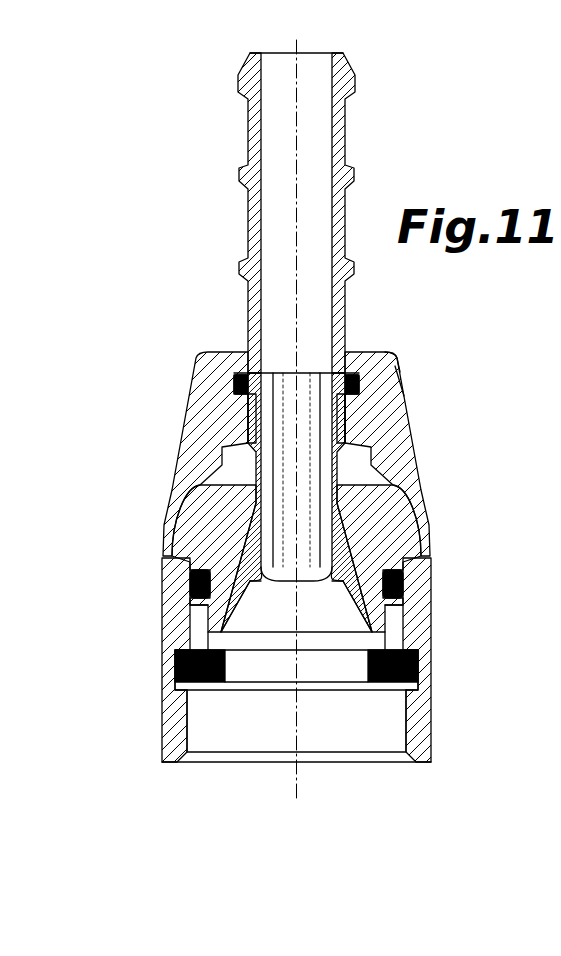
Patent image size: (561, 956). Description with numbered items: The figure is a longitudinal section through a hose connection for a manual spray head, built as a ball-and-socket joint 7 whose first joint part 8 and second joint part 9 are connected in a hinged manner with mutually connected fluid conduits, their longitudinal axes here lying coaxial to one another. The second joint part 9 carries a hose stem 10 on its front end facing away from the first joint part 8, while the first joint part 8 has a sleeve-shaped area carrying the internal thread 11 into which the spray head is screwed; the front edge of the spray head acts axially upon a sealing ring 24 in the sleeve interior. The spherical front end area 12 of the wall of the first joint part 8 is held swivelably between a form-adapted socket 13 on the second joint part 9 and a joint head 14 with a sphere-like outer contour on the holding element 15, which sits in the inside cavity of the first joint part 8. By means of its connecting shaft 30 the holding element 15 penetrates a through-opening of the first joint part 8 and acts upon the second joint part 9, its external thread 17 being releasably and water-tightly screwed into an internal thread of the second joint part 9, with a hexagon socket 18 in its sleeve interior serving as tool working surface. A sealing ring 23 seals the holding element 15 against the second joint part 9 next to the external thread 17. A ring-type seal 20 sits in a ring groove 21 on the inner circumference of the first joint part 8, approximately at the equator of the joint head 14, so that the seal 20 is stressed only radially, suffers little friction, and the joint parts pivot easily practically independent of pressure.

The ball-and-socket joint 7 is at (432, 464).
The first joint part 8 is at (432, 605).
The second joint part 9 is at (389, 371).
The hose stem 10 is at (343, 150).
The internal thread 11 is at (196, 729).
The spherical front end area 12 is at (424, 509).
The socket 13 is at (366, 416).
The joint head 14 is at (303, 615).
The holding element 15 is at (304, 367).
The external thread 17 is at (402, 381).
The hexagon socket 18 is at (320, 533).
The ring-type seal 20 is at (188, 577).
The ring groove 21 is at (197, 614).
The sealing ring 23 is at (240, 370).
The sealing ring 24 is at (426, 668).
The connecting shaft 30 is at (252, 418).